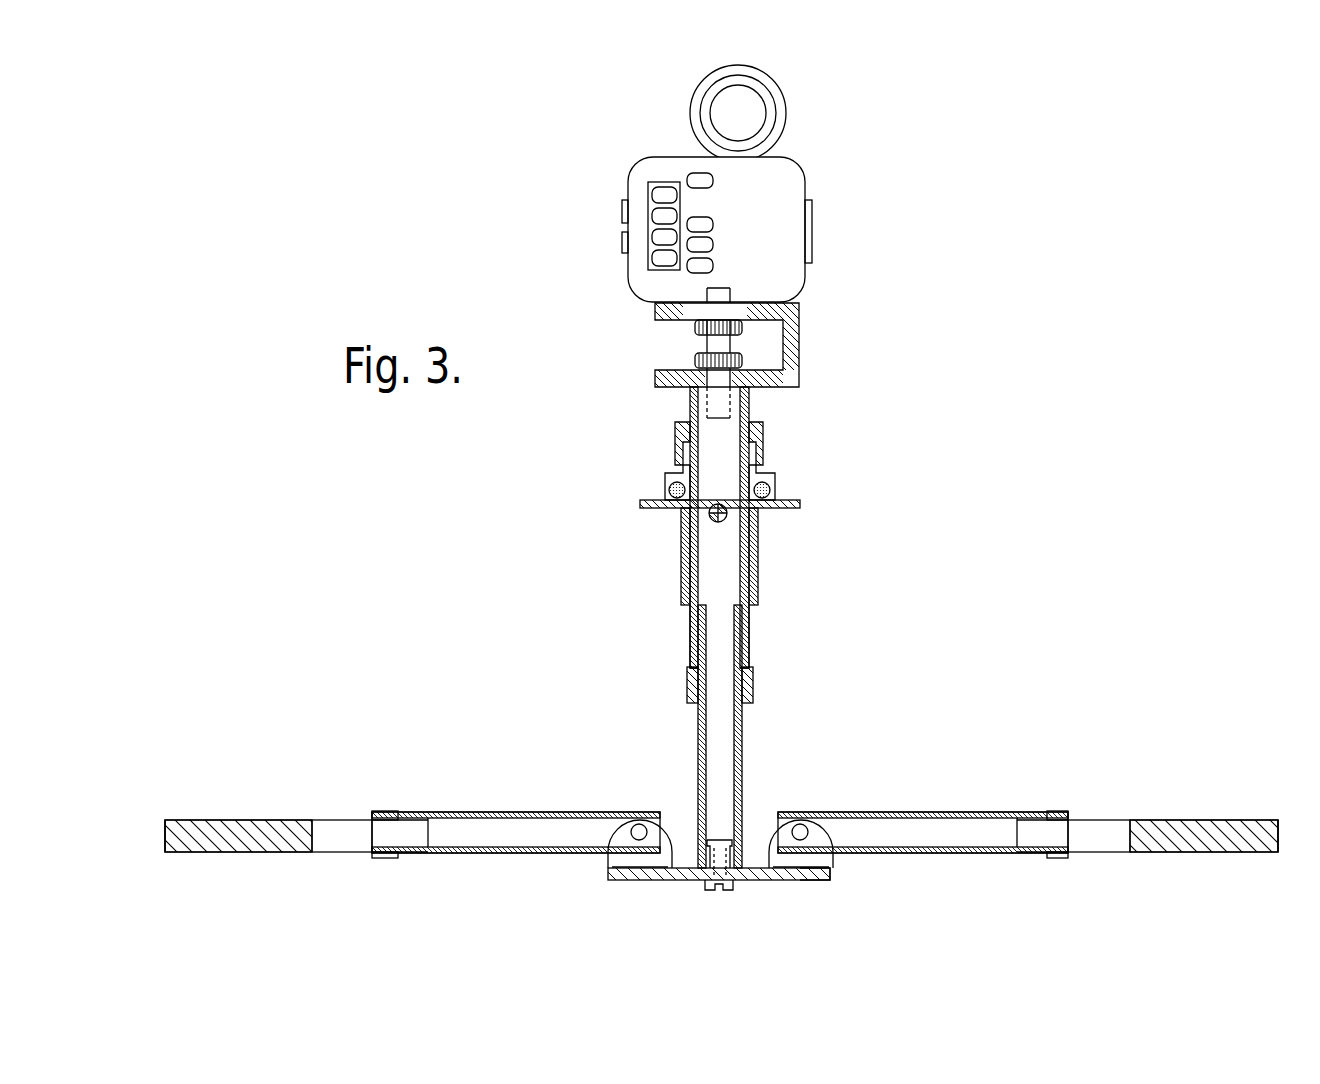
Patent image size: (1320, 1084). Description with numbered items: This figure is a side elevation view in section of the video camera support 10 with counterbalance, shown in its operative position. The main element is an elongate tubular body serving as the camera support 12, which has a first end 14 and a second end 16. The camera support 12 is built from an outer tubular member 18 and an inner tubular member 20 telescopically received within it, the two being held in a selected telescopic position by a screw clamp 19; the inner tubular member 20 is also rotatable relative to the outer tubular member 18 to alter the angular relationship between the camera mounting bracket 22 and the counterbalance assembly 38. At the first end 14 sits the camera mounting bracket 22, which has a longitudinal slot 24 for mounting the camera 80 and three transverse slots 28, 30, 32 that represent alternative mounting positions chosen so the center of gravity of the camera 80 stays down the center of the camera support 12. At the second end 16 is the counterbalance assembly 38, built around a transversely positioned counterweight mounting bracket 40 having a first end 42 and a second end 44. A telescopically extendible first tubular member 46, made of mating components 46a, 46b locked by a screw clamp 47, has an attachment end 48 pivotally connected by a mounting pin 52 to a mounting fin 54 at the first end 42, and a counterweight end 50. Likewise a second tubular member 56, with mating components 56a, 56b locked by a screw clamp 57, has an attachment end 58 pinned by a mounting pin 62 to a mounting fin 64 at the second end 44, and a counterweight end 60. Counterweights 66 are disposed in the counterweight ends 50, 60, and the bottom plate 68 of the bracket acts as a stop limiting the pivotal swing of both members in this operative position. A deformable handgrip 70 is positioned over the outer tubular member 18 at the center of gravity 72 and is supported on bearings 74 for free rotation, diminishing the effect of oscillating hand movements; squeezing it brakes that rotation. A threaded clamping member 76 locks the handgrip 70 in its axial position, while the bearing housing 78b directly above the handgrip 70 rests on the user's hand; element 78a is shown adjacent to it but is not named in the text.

The video camera support 10 is at (507, 595).
The camera support 12 is at (717, 736).
The first end 14 is at (688, 390).
The second end 16 is at (697, 863).
The outer tubular member 18 is at (692, 637).
The screw clamp 19 is at (688, 687).
The inner tubular member 20 is at (742, 747).
The camera mounting bracket 22 is at (799, 353).
The longitudinal slot 24 is at (748, 303).
The transverse slot 28 is at (677, 375).
The transverse slot 30 is at (720, 368).
The transverse slot 32 is at (758, 382).
The counterbalance assembly 38 is at (402, 748).
The counterweight mounting bracket 40 is at (743, 885).
The first end 42 is at (608, 870).
The second end 44 is at (832, 872).
The first tubular member 46 is at (516, 828).
The mating component 46a is at (463, 855).
The mating component 46b is at (260, 852).
The screw clamp 47 is at (383, 812).
The attachment end 48 is at (658, 810).
The counterweight end 50 is at (165, 822).
The mounting pin 52 is at (636, 828).
The mounting fin 54 is at (638, 860).
The second tubular member 56 is at (983, 801).
The mating component 56a is at (917, 812).
The mating component 56b is at (1233, 812).
The screw clamp 57 is at (1067, 810).
The attachment end 58 is at (780, 813).
The counterweight end 60 is at (1273, 847).
The mounting pin 62 is at (808, 830).
The mounting fin 64 is at (795, 860).
The counterweights 66 is at (205, 833).
The bottom plate 68 is at (813, 878).
The handgrip 70 is at (683, 555).
The center of gravity 72 is at (728, 515).
The bearings 74 is at (670, 487).
The threaded clamping member 76 is at (678, 442).
The seal retainer 78a is at (773, 480).
The bearing housing 78b is at (800, 503).
The camera 80 is at (782, 190).